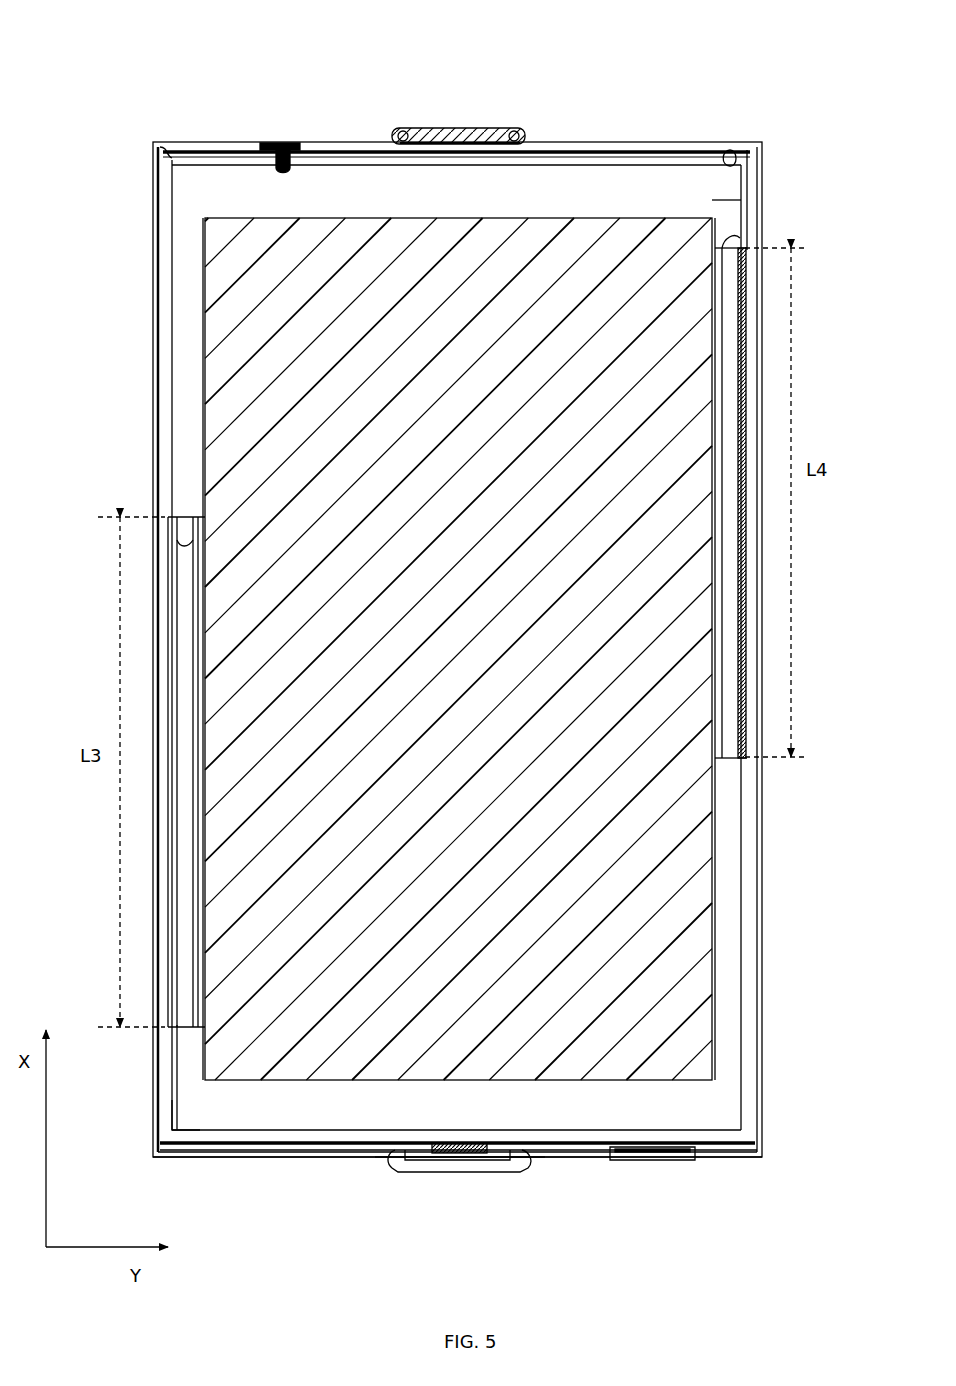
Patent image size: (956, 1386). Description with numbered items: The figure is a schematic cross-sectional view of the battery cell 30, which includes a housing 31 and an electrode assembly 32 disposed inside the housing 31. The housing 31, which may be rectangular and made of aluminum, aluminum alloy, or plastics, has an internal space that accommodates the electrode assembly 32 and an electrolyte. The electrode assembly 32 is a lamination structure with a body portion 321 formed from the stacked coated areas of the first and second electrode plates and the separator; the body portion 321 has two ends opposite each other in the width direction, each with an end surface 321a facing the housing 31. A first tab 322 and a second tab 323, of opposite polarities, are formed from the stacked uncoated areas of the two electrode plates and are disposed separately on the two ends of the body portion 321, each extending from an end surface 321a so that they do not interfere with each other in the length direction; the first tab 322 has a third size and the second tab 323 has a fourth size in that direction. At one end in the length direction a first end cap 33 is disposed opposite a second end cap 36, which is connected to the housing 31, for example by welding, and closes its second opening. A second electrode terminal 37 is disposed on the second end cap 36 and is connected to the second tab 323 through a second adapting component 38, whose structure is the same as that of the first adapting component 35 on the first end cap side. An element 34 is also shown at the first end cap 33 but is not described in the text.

The battery cell 30 is at (90, 33).
The housing 31 is at (154, 233).
The electrode assembly 32 is at (683, 1106).
The first end cap 33 is at (600, 1157).
The connecting member 34 is at (430, 1172).
The first adapting component 35 is at (212, 1095).
The second end cap 36 is at (600, 148).
The second electrode terminal 37 is at (430, 142).
The second adapting component 38 is at (722, 198).
The body portion 321 is at (598, 940).
The end surface 321a is at (200, 390).
The first tab 322 is at (180, 518).
The second tab 323 is at (735, 236).